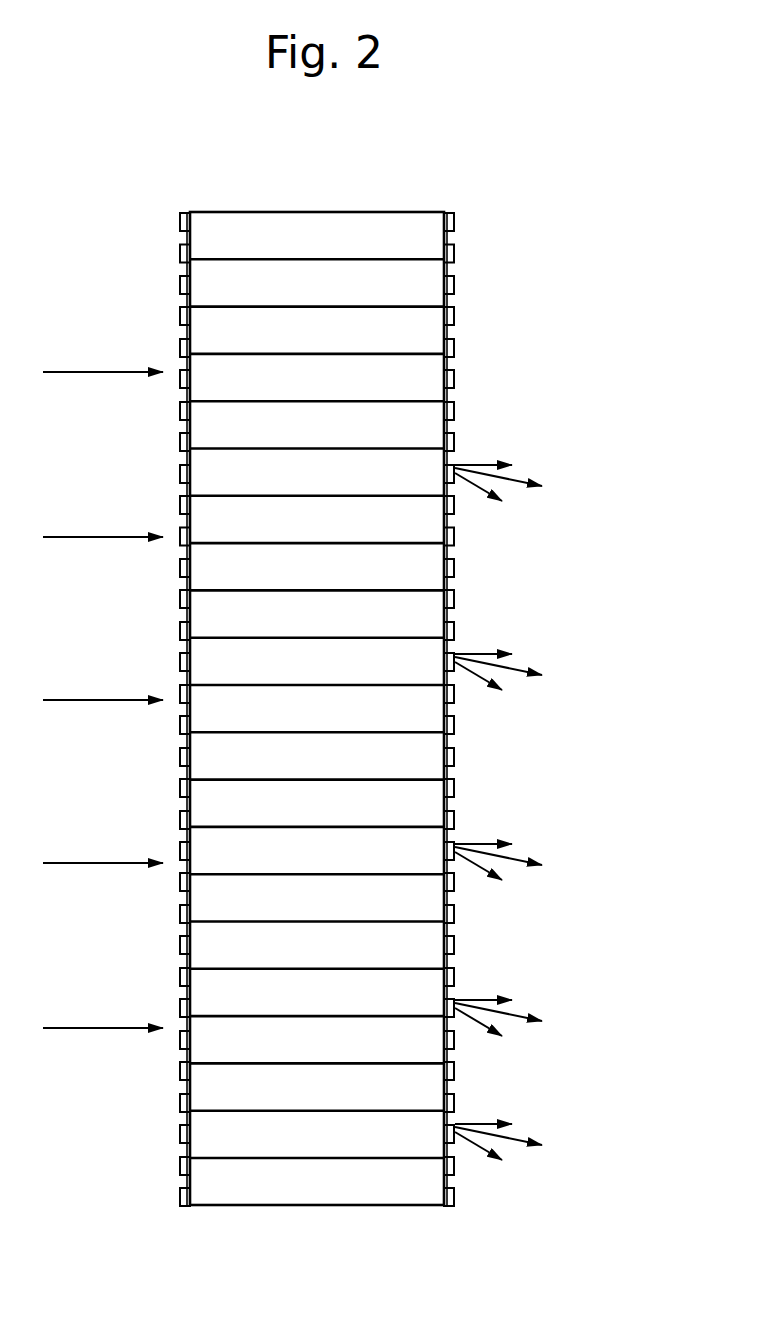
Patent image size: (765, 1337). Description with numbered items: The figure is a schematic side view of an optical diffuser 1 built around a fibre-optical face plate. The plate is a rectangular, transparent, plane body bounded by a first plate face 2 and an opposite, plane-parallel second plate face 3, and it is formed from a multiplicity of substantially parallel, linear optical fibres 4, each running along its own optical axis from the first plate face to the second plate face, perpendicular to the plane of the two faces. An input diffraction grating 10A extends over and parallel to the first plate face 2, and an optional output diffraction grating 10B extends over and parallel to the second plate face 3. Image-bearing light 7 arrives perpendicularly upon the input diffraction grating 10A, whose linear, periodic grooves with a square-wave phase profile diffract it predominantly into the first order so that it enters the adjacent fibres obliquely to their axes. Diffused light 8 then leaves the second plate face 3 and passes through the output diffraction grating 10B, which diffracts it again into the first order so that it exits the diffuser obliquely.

The optical diffuser 1 is at (392, 200).
The first plate face 2 is at (170, 228).
The second plate face 3 is at (485, 303).
The optical fibres 4 is at (280, 227).
The image-bearing light 7 is at (62, 373).
The diffused light 8 is at (513, 483).
The input diffraction grating 10A is at (178, 312).
The output diffraction grating 10B is at (453, 380).